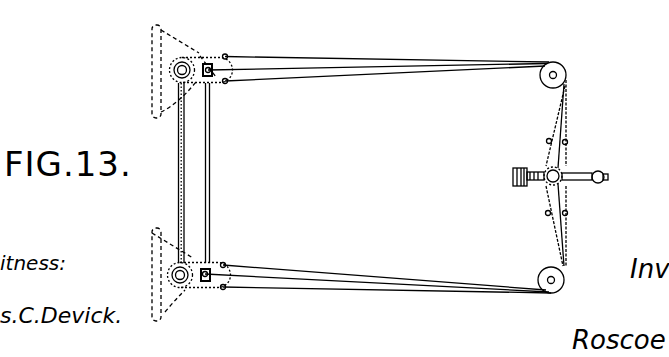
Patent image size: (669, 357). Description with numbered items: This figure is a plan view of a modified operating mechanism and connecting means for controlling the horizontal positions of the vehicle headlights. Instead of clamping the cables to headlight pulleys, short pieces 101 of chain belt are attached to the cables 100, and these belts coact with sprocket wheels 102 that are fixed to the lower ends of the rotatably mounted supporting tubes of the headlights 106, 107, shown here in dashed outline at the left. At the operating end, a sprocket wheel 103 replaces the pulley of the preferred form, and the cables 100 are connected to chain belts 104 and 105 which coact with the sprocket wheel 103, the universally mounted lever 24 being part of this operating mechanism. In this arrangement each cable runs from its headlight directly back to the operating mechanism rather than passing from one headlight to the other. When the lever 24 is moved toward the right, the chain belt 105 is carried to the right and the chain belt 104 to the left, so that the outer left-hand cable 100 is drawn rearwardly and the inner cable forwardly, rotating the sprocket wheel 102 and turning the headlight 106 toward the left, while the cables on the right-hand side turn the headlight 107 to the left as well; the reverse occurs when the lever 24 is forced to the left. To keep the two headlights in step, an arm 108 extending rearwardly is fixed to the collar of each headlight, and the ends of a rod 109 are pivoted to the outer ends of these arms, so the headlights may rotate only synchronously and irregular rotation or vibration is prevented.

The lever 24 is at (600, 182).
The cables 100 is at (306, 57).
The short pieces of chain belt 101 is at (216, 82).
The sprocket wheels 102 is at (176, 75).
The sprocket wheel 103 is at (568, 172).
The chain belt 104 is at (545, 163).
The chain belt 105 is at (570, 198).
The headlight 106 is at (158, 236).
The headlight 107 is at (187, 44).
The arm 108 is at (206, 60).
The rod 109 is at (210, 170).